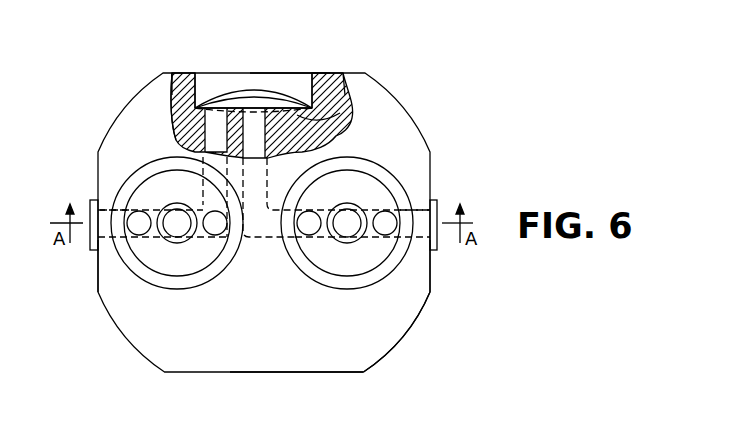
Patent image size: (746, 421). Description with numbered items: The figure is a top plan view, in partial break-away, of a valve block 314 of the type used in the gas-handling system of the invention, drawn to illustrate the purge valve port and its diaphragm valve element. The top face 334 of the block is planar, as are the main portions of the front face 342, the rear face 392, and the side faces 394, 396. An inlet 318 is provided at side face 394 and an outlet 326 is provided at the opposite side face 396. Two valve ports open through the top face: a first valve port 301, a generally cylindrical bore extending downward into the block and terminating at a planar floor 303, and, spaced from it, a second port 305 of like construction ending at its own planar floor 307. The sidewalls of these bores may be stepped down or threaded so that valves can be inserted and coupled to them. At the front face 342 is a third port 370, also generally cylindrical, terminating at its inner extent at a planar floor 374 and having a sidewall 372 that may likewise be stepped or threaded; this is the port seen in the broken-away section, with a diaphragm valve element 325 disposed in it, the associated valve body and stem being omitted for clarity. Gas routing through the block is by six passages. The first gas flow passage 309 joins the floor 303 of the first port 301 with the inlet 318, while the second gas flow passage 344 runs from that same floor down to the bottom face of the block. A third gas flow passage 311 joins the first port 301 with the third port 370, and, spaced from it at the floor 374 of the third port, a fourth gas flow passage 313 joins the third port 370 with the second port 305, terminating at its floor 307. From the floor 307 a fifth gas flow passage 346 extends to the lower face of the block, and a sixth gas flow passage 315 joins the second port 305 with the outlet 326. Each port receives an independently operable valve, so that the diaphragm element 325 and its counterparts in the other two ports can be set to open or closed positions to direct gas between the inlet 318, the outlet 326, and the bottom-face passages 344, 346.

The first valve port 301 is at (195, 263).
The planar floor 303 is at (177, 234).
The second port 305 is at (340, 268).
The planar floor 307 is at (348, 237).
The first gas flow passage 309 is at (108, 208).
The third gas flow passage 311 is at (192, 133).
The fourth gas flow passage 313 is at (262, 135).
The valve block 314 is at (393, 322).
The sixth gas flow passage 315 is at (417, 210).
The inlet 318 is at (90, 201).
The diaphragm valve element 325 is at (255, 90).
The outlet 326 is at (433, 205).
The top face 334 is at (289, 341).
The front face 342 is at (287, 73).
The second gas flow passage 344 is at (163, 247).
The fifth gas flow passage 346 is at (355, 245).
The third port 370 is at (227, 86).
The sidewall 372 is at (304, 73).
The planar floor 374 is at (336, 113).
The bottom surface 392 is at (335, 373).
The side face 394 is at (98, 275).
The side face 396 is at (430, 273).